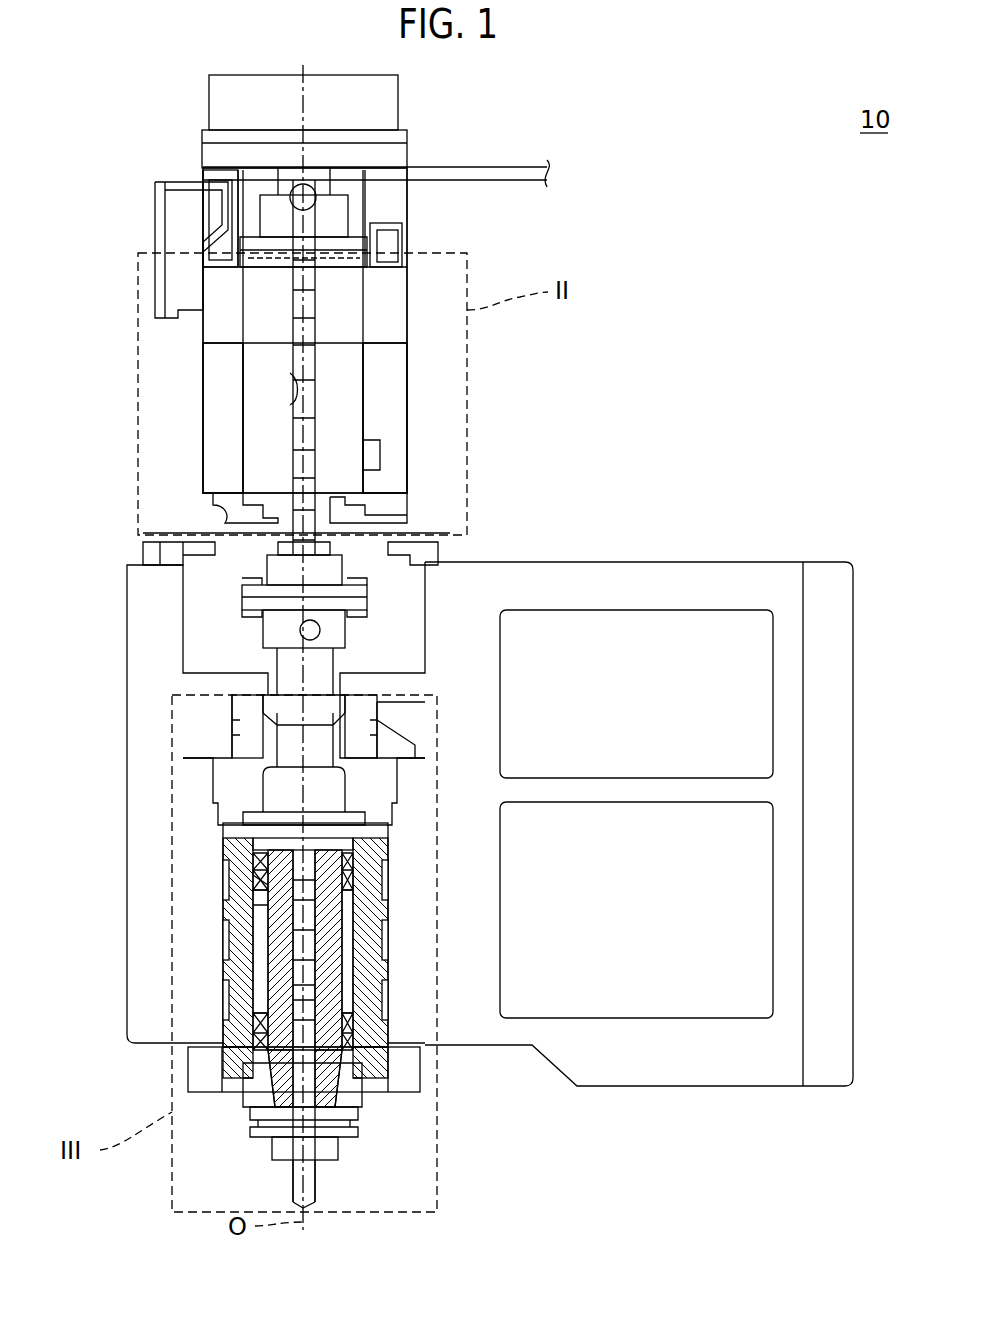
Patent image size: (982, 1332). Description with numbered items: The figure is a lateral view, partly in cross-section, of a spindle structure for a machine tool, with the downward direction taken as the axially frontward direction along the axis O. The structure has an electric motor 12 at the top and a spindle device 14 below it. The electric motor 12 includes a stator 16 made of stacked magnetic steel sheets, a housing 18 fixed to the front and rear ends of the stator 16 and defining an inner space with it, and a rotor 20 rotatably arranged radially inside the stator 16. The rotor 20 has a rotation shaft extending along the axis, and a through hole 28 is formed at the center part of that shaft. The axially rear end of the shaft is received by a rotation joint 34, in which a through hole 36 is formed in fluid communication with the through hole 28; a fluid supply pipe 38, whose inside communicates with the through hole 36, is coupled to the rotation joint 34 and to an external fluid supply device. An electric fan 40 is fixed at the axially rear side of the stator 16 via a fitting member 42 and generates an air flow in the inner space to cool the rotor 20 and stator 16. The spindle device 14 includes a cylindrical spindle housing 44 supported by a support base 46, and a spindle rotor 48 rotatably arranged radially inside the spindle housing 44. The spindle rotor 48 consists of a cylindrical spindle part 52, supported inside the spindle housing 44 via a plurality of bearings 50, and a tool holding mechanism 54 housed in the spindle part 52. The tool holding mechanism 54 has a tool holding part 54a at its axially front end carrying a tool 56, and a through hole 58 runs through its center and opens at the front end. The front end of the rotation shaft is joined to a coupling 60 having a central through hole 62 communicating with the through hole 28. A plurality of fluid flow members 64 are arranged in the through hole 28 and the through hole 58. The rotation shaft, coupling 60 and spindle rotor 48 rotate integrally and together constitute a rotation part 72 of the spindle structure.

The electric motor 12 is at (440, 407).
The spindle device 14 is at (100, 715).
The stator 16 is at (213, 458).
The housing 18 is at (213, 290).
The rotor 20 is at (373, 480).
The through hole 28 is at (300, 397).
The rotation joint 34 is at (330, 215).
The through hole 36 is at (300, 200).
The fluid supply pipe 38 is at (488, 175).
The electric fan 40 is at (232, 101).
The fitting member 42 is at (218, 183).
The spindle housing 44 is at (230, 1038).
The support base 46 is at (620, 575).
The spindle rotor 48 is at (350, 925).
The bearings 50 is at (352, 870).
The spindle part 52 is at (273, 992).
The tool holding mechanism 54 is at (350, 1088).
The tool holding part 54a is at (280, 1148).
The tool 56 is at (310, 1180).
The through hole 58 is at (307, 990).
The coupling 60 is at (250, 600).
The through hole 62 is at (318, 640).
The fluid flow members 64 is at (317, 418).
The rotation part 72 is at (355, 790).